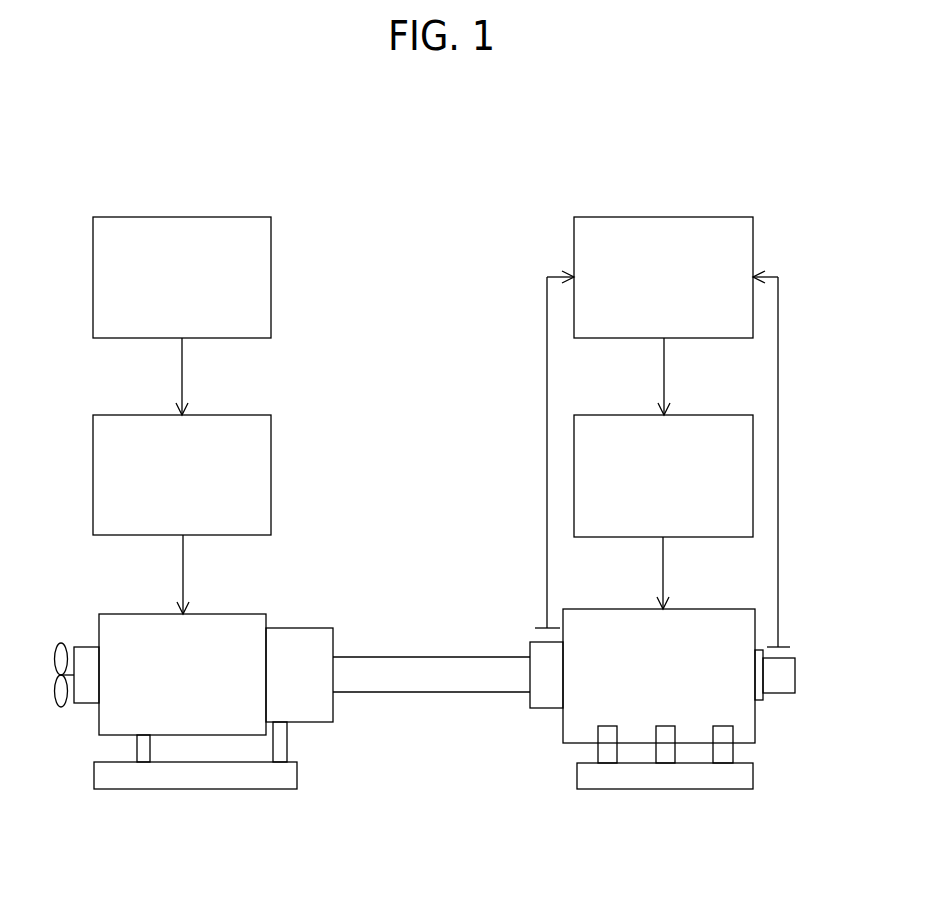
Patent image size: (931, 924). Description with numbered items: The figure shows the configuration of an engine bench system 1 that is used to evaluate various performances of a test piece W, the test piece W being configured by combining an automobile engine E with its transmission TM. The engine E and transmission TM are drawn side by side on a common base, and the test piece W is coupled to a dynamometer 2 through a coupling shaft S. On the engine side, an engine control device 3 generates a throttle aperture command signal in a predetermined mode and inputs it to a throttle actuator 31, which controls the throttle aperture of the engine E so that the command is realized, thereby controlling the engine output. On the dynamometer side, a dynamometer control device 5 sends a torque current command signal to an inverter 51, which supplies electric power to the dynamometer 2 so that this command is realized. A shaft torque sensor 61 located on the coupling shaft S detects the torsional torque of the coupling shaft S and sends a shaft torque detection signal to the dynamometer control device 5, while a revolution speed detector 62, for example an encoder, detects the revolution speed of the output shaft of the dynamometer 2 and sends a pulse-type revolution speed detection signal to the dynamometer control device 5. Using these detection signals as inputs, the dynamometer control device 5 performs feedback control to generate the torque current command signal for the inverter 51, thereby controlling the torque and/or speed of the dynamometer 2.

The engine bench system 1 is at (134, 133).
The dynamometer 2 is at (607, 609).
The engine control device 3 is at (233, 217).
The throttle actuator 31 is at (232, 415).
The dynamometer control device 5 is at (720, 217).
The inverter 51 is at (720, 415).
The shaft torque sensor 61 is at (540, 627).
The revolution speed detector 62 is at (785, 645).
The engine E is at (238, 614).
The transmission TM is at (310, 628).
The coupling shaft S is at (397, 657).
The test piece W is at (293, 637).